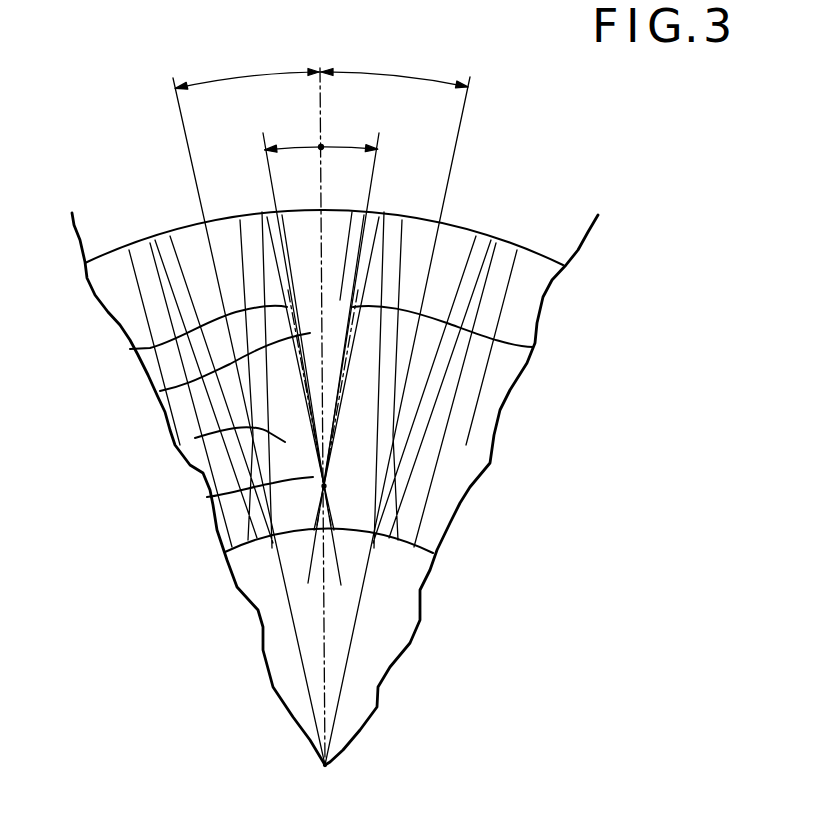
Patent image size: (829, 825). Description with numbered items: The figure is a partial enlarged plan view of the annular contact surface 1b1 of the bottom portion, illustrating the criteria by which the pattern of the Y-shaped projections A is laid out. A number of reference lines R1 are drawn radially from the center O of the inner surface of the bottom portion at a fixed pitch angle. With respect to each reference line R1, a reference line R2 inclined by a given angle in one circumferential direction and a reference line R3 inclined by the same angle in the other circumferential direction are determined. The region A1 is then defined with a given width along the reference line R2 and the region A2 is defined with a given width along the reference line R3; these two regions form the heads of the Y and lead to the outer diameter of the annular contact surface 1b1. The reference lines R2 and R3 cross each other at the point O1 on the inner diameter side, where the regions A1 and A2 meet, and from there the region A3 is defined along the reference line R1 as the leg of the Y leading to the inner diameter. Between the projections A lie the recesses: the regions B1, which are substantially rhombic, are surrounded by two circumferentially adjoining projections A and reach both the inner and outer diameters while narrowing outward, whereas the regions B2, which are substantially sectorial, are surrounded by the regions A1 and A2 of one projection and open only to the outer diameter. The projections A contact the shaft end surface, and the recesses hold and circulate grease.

The annular contact surface 1b1 is at (133, 210).
The reference line R1 is at (327, 391).
The reference line R2 is at (293, 341).
The reference line R3 is at (360, 340).
The region A1 is at (130, 349).
The region A2 is at (533, 347).
The region A3 is at (207, 497).
The region B1 is at (195, 438).
The region B2 is at (160, 391).
The projection A is at (354, 374).
The center O is at (330, 762).
The crossing point O1 is at (332, 489).